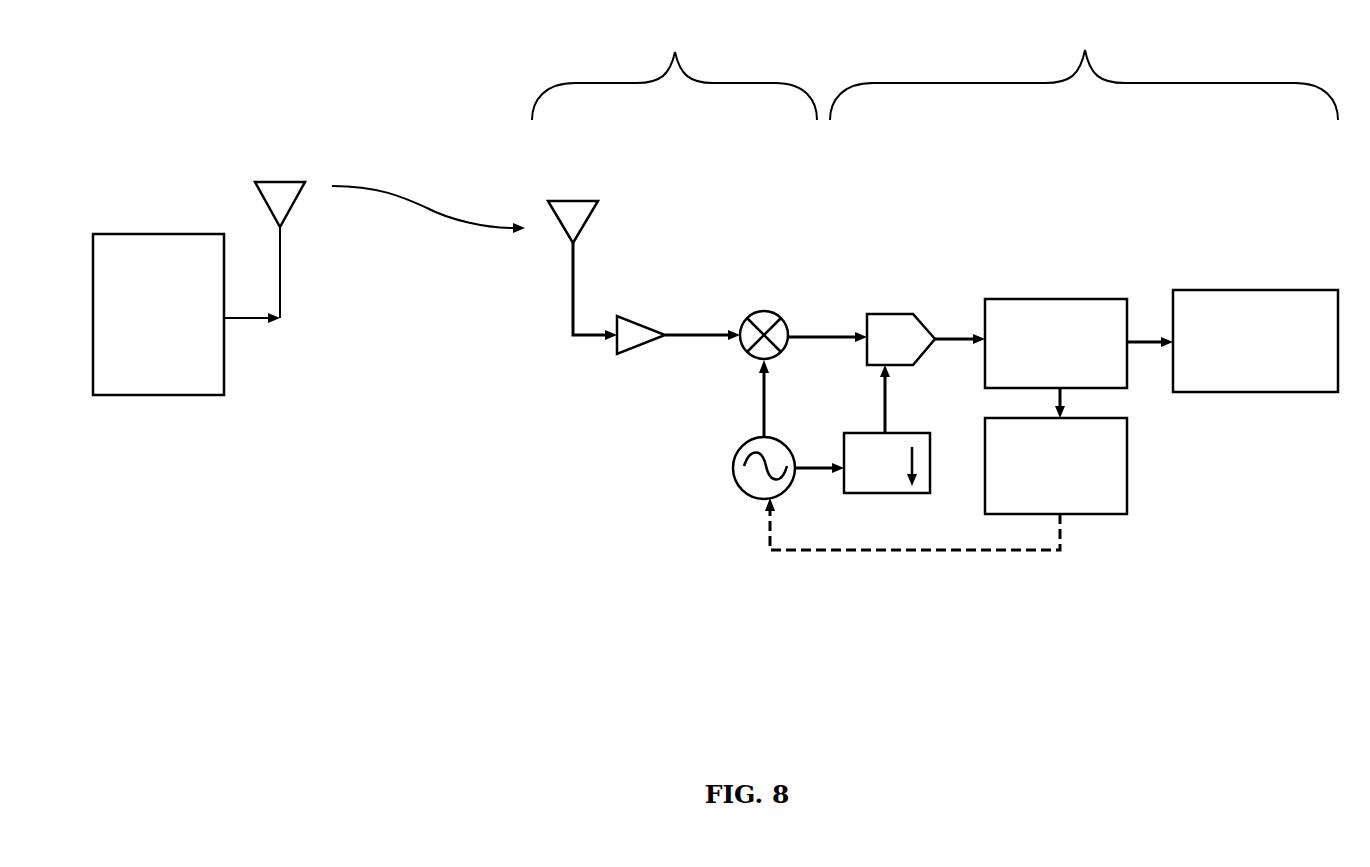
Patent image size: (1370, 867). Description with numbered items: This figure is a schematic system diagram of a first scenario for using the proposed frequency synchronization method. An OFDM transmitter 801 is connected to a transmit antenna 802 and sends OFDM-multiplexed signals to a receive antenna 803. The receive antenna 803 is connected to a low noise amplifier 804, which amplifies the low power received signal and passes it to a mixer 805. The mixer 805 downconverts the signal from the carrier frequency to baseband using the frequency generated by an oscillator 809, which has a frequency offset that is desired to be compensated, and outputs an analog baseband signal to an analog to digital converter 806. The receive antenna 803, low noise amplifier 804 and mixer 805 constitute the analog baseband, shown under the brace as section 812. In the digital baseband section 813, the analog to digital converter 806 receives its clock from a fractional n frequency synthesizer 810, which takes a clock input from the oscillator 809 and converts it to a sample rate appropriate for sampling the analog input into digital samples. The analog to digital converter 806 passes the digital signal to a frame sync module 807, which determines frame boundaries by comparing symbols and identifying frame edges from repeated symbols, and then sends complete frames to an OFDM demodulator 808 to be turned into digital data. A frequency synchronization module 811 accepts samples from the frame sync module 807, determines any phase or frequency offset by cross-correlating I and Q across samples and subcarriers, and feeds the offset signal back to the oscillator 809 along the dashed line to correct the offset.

The OFDM transmitter 801 is at (153, 220).
The transmit antenna 802 is at (282, 153).
The receive antenna 803 is at (577, 182).
The low noise amplifier (LNA) 804 is at (655, 318).
The mixer 805 is at (752, 303).
The analog to digital converter (ADC) 806 is at (907, 310).
The frame sync module 807 is at (1045, 287).
The OFDM demodulator 808 is at (1225, 283).
The oscillator 809 is at (730, 462).
The fractional n frequency synthesizer 810 is at (862, 430).
The frequency synchronization module 811 is at (1137, 485).
The analog baseband section 812 is at (674, 70).
The digital baseband section 813 is at (1084, 70).